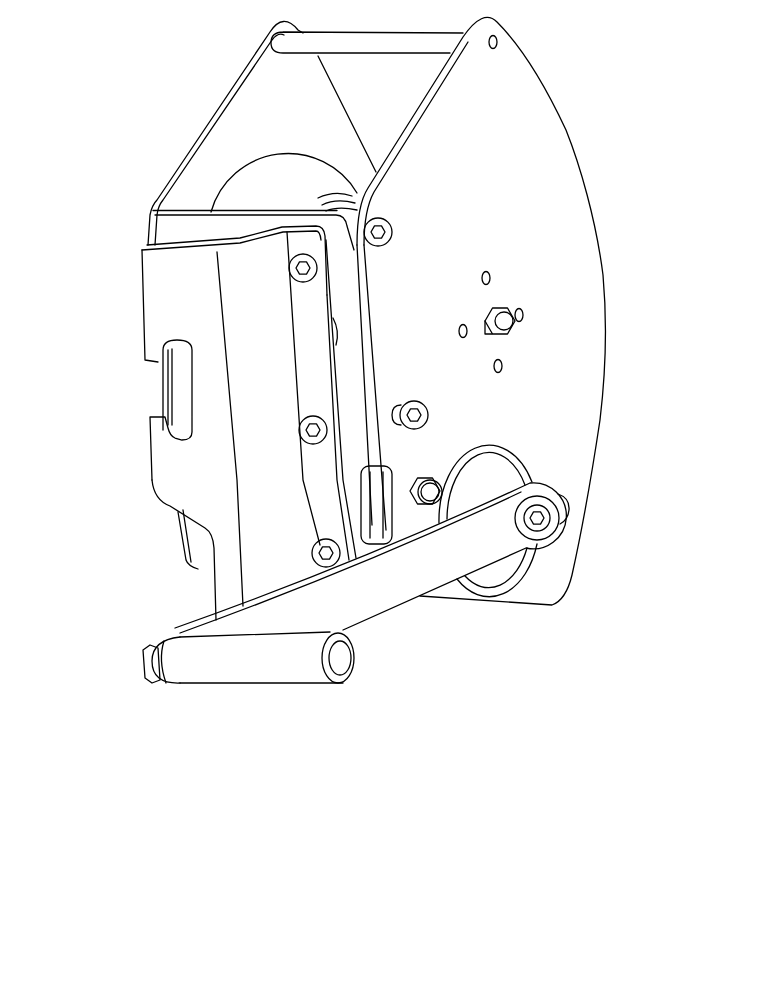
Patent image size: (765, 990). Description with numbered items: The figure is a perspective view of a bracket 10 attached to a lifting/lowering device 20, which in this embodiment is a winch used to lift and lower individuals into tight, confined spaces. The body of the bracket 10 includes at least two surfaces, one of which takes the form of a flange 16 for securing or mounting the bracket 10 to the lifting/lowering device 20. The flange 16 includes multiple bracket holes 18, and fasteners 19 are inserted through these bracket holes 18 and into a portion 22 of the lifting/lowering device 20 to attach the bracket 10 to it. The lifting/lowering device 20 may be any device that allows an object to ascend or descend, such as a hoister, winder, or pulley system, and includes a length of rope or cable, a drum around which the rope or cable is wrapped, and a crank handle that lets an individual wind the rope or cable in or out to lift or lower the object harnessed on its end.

The bracket 10 is at (148, 520).
The flange 16 is at (334, 508).
The bracket holes 18 is at (300, 252).
The fasteners 19 is at (300, 430).
The lifting/lowering device 20 is at (589, 92).
The portion of the lifting/lowering device 22 is at (368, 427).